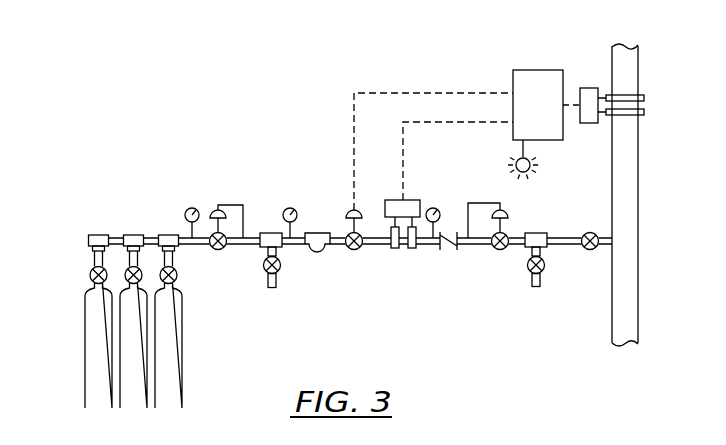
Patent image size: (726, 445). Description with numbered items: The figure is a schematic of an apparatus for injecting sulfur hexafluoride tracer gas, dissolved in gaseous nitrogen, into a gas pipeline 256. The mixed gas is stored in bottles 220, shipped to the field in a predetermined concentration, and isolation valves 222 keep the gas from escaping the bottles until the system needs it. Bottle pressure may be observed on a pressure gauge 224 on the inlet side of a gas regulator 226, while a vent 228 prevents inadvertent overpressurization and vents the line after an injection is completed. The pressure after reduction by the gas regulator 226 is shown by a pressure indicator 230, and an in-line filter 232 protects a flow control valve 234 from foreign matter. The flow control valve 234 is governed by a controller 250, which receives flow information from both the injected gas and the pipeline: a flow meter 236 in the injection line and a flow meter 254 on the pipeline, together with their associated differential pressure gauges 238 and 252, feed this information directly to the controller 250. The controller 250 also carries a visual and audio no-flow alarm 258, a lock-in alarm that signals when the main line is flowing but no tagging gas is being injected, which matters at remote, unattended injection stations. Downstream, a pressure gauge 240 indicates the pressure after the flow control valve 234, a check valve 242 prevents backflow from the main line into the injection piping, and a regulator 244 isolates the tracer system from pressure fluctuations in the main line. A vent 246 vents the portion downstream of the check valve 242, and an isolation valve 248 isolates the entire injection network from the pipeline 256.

The bottles 220 is at (85, 365).
The isolation valves 222 is at (90, 278).
The pressure gauge 224 is at (187, 208).
The gas regulator 226 is at (212, 210).
The vent 228 is at (283, 270).
The pressure indicator 230 is at (291, 207).
The in-line filter 232 is at (327, 244).
The flow control valve 234 is at (357, 207).
The flow meter 236 is at (412, 250).
The differential pressure gauge 238 is at (414, 200).
The pressure gauge 240 is at (437, 208).
The check valve 242 is at (455, 248).
The regulator 244 is at (508, 211).
The vent 246 is at (547, 273).
The isolation valve 248 is at (598, 206).
The controller 250 is at (513, 70).
The differential pressure gauge 252 is at (588, 88).
The flow meter 254 is at (640, 93).
The gas pipeline 256 is at (640, 205).
The no-flow alarm 258 is at (512, 160).